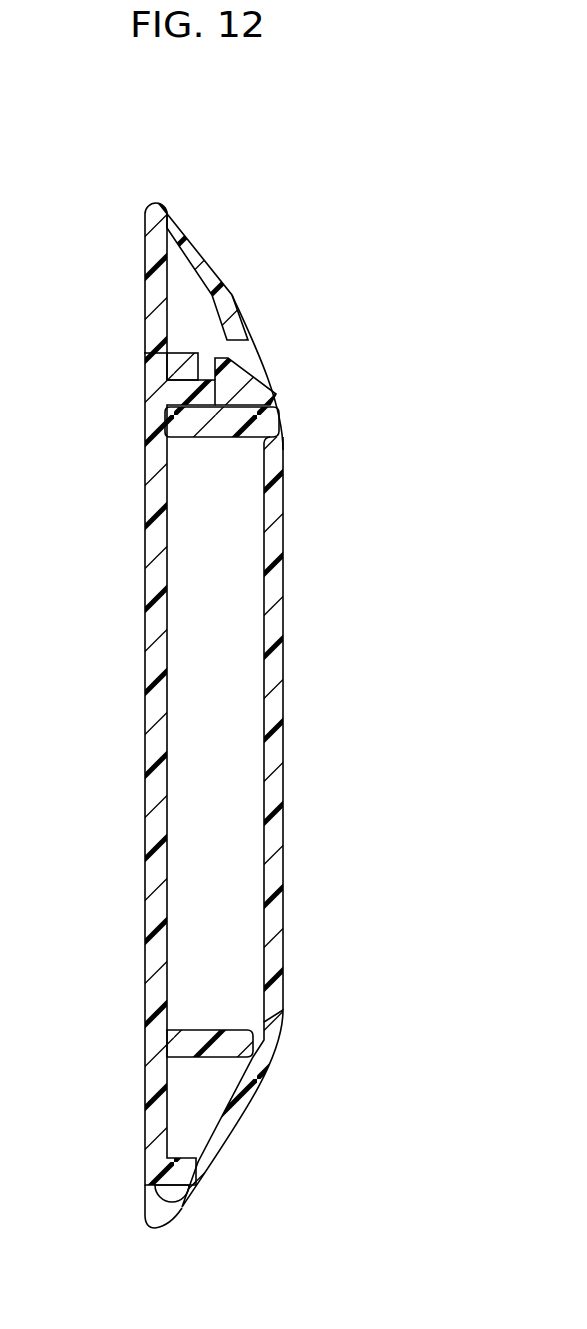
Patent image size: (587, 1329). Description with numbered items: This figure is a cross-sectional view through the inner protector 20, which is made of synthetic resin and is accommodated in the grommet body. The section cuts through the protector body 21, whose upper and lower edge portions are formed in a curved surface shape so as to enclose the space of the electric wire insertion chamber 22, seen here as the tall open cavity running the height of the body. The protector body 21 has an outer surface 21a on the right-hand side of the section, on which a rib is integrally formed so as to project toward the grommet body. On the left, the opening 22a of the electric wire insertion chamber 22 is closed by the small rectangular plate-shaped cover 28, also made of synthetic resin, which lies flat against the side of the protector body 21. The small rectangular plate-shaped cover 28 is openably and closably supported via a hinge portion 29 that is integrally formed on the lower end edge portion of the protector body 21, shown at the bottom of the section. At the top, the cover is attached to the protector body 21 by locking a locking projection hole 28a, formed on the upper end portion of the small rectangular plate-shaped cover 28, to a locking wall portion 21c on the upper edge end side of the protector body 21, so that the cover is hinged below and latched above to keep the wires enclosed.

The inner protector 20 is at (352, 634).
The protector body 21 is at (290, 522).
The outer surface 21a is at (284, 855).
The locking wall portion 21c is at (178, 353).
The electric wire insertion chamber 22 is at (242, 764).
The opening 22a is at (207, 437).
The small rectangular plate-shaped cover 28 is at (145, 692).
The locking projection hole 28a is at (240, 380).
The hinge portion 29 is at (186, 1210).